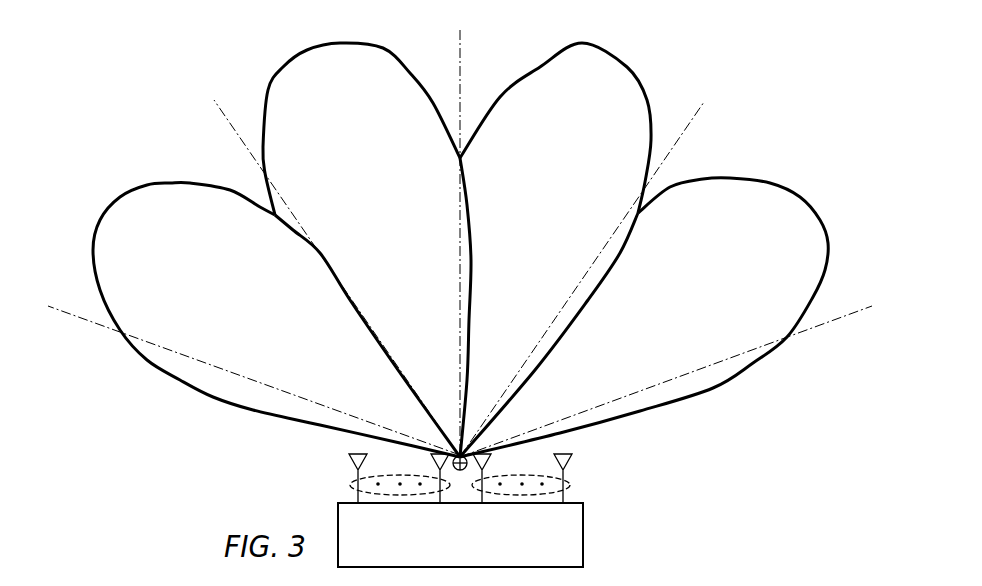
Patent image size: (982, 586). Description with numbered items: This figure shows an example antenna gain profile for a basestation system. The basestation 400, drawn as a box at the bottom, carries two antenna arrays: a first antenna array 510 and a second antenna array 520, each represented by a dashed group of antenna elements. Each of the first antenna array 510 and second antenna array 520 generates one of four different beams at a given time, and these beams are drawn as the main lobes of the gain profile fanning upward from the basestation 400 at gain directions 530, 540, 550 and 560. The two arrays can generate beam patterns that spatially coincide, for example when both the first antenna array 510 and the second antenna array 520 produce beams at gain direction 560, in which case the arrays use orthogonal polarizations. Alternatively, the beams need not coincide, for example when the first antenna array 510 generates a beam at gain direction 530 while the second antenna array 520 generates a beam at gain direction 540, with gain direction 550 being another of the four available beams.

The basestation 400 is at (584, 538).
The first antenna array 510 is at (353, 484).
The second antenna array 520 is at (570, 484).
The beam at gain direction 530 is at (802, 196).
The beam at gain direction 540 is at (596, 45).
The beam at gain direction 550 is at (325, 45).
The beam at gain direction 560 is at (120, 197).